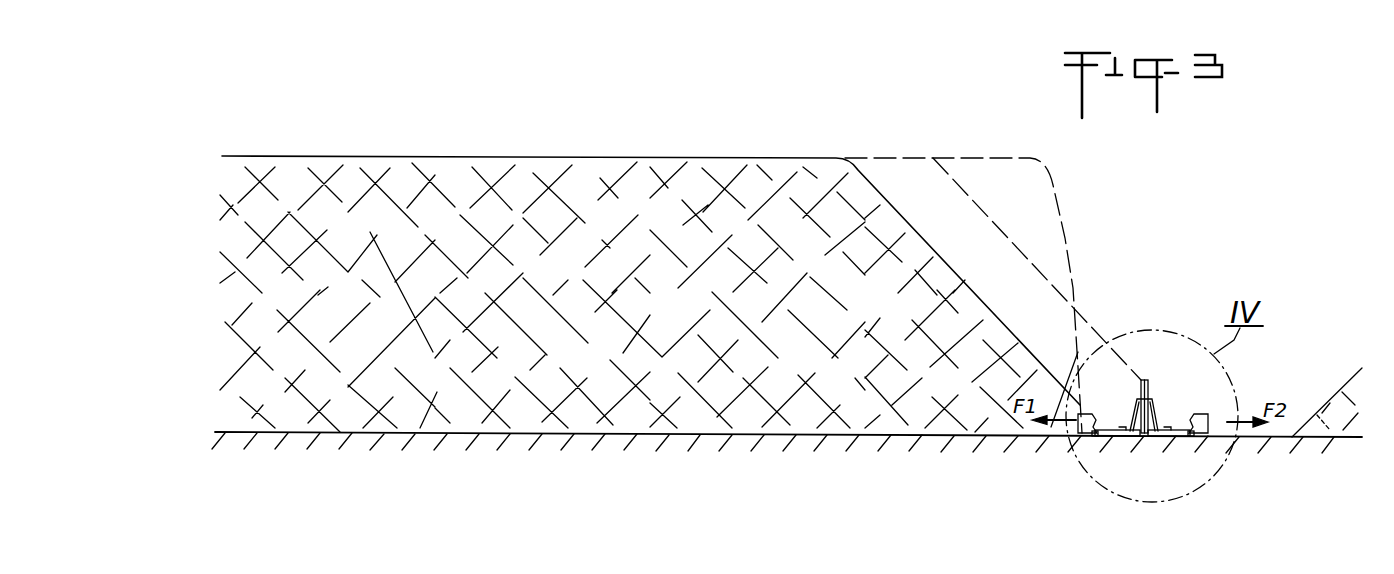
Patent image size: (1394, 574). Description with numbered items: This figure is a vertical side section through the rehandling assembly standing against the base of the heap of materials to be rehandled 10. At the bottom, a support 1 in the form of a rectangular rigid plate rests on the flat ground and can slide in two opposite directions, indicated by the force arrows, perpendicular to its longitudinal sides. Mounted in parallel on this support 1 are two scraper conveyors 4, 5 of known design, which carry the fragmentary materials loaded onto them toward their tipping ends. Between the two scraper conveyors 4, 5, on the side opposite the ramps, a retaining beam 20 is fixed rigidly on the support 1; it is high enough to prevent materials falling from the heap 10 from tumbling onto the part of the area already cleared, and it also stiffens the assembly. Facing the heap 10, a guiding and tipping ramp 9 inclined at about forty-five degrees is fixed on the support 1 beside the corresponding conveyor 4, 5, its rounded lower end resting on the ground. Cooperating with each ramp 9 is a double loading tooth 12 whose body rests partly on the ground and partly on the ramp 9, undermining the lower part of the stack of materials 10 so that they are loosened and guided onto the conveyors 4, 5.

The heap of materials to be rehandled 10 is at (783, 229).
The retaining beam 20 is at (1146, 379).
The support 1 is at (1138, 440).
The scraper conveyor 4 is at (1105, 423).
The scraper conveyor 5 is at (1180, 425).
The guiding and tipping ramp 9 is at (1091, 441).
The double loading tooth 12 is at (1077, 438).